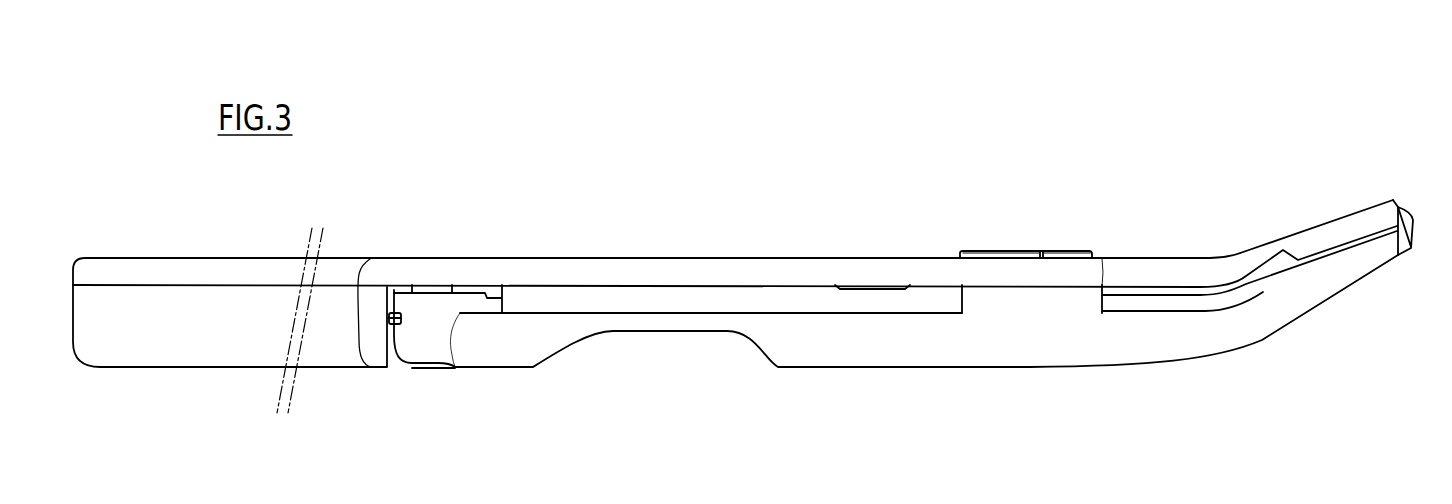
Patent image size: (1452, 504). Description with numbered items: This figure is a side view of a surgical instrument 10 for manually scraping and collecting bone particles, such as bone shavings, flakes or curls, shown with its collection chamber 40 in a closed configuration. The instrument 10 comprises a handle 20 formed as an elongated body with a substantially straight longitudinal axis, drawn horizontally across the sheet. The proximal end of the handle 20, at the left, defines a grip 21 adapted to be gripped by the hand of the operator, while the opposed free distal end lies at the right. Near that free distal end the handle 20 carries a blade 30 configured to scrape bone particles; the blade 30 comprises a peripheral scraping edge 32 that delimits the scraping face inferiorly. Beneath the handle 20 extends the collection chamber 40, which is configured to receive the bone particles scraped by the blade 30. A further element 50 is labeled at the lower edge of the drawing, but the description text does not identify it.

The surgical instrument 10 is at (747, 267).
The handle 20 is at (415, 258).
The grip 21 is at (210, 305).
The blade 30 is at (1395, 245).
The peripheral scraping edge 32 is at (1416, 255).
The collection chamber 40 is at (865, 367).
The inner block 50 is at (1179, 367).